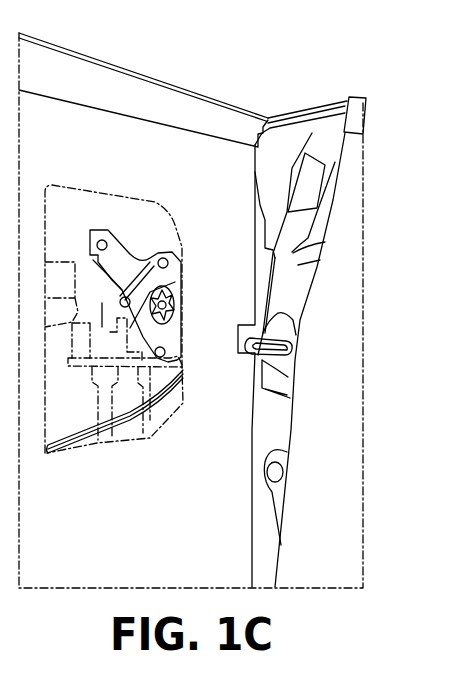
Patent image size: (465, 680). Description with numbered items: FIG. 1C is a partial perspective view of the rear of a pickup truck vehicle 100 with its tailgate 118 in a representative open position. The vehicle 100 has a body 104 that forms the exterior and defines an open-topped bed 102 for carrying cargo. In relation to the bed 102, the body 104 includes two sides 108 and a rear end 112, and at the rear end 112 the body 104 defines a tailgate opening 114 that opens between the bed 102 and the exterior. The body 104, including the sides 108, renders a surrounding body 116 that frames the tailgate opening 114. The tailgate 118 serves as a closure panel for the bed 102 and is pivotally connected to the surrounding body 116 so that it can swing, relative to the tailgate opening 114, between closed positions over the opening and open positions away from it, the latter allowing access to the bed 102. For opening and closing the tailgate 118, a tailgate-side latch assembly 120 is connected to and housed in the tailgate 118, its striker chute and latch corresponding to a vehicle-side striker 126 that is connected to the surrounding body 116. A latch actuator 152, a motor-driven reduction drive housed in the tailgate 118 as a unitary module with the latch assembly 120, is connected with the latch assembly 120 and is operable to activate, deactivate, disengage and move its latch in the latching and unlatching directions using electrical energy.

The vehicle 100 is at (366, 100).
The bed 102 is at (348, 173).
The body 104 is at (368, 128).
The sides 108 is at (342, 210).
The rear end 112 is at (295, 243).
The tailgate opening 114 is at (280, 290).
The surrounding body 116 is at (285, 320).
The tailgate 118 is at (152, 77).
The latch assembly 120 is at (166, 250).
The striker 126 is at (292, 343).
The latch actuator 152 is at (132, 352).